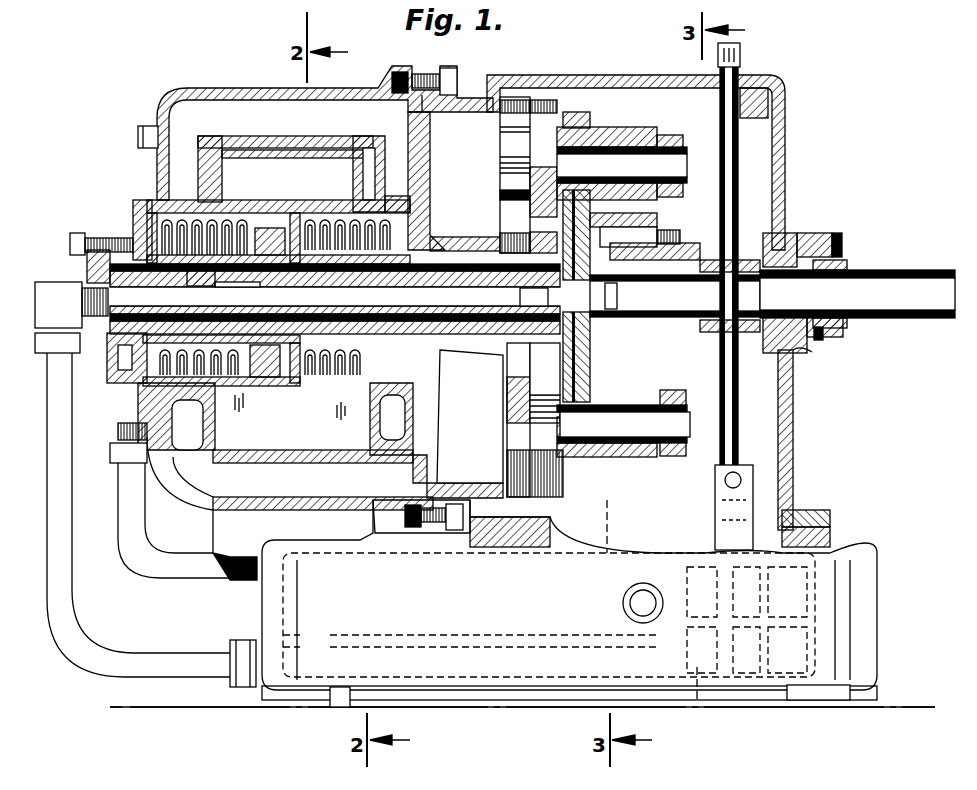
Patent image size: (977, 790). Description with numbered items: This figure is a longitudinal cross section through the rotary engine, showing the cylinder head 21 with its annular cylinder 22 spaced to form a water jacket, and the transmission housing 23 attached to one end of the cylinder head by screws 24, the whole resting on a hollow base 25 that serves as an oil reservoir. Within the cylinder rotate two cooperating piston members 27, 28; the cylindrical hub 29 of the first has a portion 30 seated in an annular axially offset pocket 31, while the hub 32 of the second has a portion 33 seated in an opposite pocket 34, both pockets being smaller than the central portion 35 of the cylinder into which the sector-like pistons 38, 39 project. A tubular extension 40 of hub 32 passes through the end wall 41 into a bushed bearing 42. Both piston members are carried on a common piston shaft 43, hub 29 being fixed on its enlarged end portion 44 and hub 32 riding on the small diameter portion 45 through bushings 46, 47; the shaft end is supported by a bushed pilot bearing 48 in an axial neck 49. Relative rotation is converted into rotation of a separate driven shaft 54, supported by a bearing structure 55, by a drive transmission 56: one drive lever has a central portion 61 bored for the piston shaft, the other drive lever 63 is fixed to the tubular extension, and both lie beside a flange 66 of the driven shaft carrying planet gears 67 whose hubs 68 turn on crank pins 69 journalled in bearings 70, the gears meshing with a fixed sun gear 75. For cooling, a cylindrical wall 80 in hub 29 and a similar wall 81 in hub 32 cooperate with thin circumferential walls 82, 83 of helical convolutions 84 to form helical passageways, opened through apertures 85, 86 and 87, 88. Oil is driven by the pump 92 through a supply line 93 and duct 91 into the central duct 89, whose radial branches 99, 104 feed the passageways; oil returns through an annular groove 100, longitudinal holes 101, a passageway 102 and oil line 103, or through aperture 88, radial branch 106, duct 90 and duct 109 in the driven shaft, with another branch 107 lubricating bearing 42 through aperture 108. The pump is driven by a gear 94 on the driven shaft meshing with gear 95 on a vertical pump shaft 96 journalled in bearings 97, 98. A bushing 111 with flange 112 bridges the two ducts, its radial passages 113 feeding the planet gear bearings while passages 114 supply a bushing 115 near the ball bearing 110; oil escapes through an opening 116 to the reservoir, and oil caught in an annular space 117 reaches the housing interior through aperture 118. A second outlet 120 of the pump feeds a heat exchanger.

The cylinder head 21 is at (232, 88).
The annular cylinder 22 is at (340, 138).
The transmission housing 23 is at (600, 76).
The screws 24 is at (458, 75).
The hollow base 25 is at (440, 620).
The piston member 27 is at (263, 202).
The piston member 28 is at (268, 166).
The cylindrical hub 29 is at (230, 203).
The portion of hub 30 is at (134, 210).
The annular axially offset pocket 31 is at (170, 203).
The hub 32 is at (398, 205).
The portion of hub 33 is at (403, 190).
The annular axially offset pocket 34 is at (432, 200).
The central portion of cylinder 35 is at (385, 160).
The sector-like piston 38 is at (293, 162).
The sector-like piston 39 is at (272, 463).
The tubular extension 40 is at (455, 245).
The end wall 41 is at (428, 160).
The bushed bearing 42 is at (478, 240).
The piston shaft 43 is at (490, 355).
The enlarged end portion of shaft 44 is at (335, 299).
The small diameter portion of shaft 45 is at (534, 297).
The bushing 46 is at (292, 299).
The bushing 47 is at (491, 299).
The bushed pilot bearing 48 is at (90, 268).
The axial neck 49 is at (115, 230).
The driven shaft 54 is at (920, 268).
The bearing structure 55 is at (790, 235).
The drive transmission 56 is at (535, 96).
The central portion of lever 61 is at (530, 363).
The drive lever 63 is at (590, 140).
The flange 66 is at (577, 112).
The planet gears 67 is at (635, 132).
The hubs of planet gears 68 is at (578, 445).
The crank pins 69 is at (670, 158).
The bearings 70 is at (670, 136).
The sun gear 75 is at (655, 218).
The cylindrical wall 80 is at (118, 392).
The cylindrical wall 81 is at (298, 382).
The circumferential wall 82 is at (228, 400).
The circumferential wall 83 is at (334, 230).
The helical convolutions 84 is at (243, 383).
The aperture 85 is at (199, 288).
The aperture 86 is at (237, 288).
The aperture 87 is at (322, 299).
The aperture 88 is at (391, 299).
The central duct 89 is at (185, 398).
The central duct 90 is at (452, 365).
The duct 91 is at (80, 302).
The pump 92 is at (697, 700).
The supply line 93 is at (50, 372).
The gear 94 is at (765, 345).
The gear 95 is at (740, 350).
The pump shaft 96 is at (740, 160).
The bearing 97 is at (750, 258).
The bearing 98 is at (748, 92).
The radial branch 99 is at (227, 302).
The annular groove 100 is at (118, 370).
The longitudinal holes 101 is at (112, 300).
The passageway 102 is at (118, 430).
The oil line 103 is at (150, 560).
The radial branch 104 is at (358, 299).
The radial branch 106 is at (425, 299).
The radial branch 107 is at (463, 299).
The aperture 108 is at (472, 250).
The duct 109 is at (595, 296).
The ball bearing 110 is at (838, 236).
The bushing 111 is at (550, 368).
The flange 112 is at (547, 238).
The radial passages 113 is at (570, 218).
The radial passages 114 is at (812, 294).
The bushing 115 is at (800, 235).
The opening 116 is at (796, 370).
The annular space 117 is at (818, 355).
The aperture 118 is at (800, 355).
The second outlet 120 is at (640, 606).